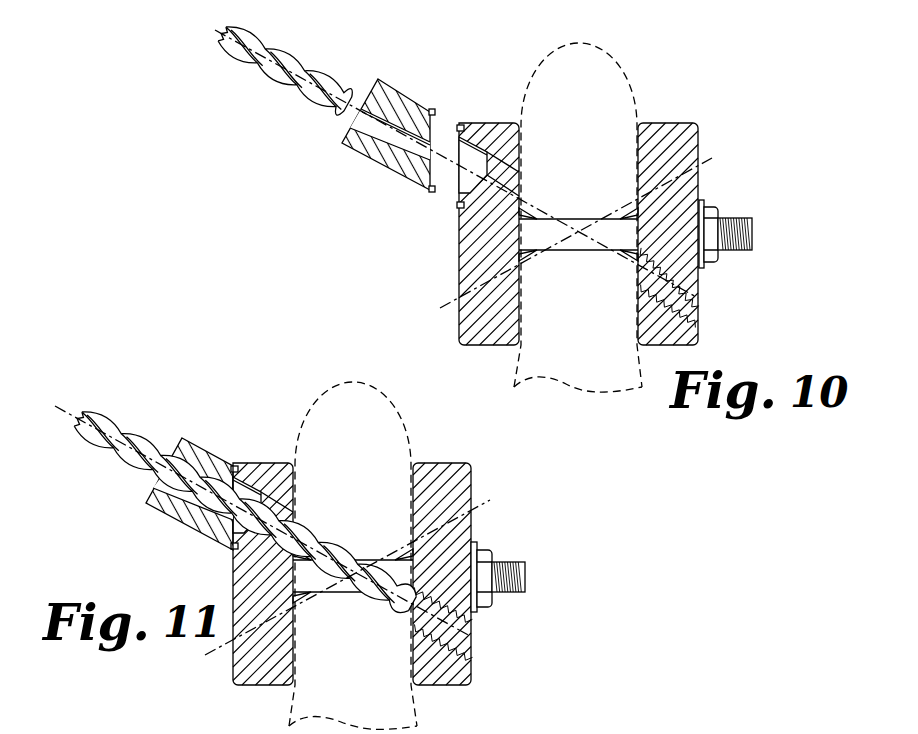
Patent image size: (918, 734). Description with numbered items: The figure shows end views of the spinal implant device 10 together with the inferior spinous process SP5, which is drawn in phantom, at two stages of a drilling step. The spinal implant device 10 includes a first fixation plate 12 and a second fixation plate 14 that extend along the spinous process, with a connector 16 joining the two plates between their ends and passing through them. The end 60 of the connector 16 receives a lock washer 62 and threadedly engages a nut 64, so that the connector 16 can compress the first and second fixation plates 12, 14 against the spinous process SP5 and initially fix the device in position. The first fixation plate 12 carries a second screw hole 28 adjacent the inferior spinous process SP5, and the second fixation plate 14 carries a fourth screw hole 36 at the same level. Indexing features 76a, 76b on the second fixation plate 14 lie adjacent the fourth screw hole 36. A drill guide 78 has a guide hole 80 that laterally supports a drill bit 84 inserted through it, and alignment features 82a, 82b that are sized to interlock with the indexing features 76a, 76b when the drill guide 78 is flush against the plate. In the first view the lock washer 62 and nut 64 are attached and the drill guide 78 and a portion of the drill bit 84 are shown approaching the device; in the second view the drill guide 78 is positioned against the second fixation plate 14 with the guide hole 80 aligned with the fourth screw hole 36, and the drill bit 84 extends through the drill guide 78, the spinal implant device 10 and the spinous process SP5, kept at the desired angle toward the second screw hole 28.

In FIG. 10, the spinal implant device 10 is at (761, 89).
In FIG. 11, the spinal implant device 10 is at (218, 398).
In FIG. 10, the first fixation plate 12 is at (668, 122).
In FIG. 11, the first fixation plate 12 is at (437, 462).
In FIG. 10, the second fixation plate 14 is at (480, 122).
In FIG. 11, the second fixation plate 14 is at (255, 462).
In FIG. 10, the connector 16 is at (578, 218).
In FIG. 11, the connector 16 is at (355, 560).
In FIG. 10, the second screw hole 28 is at (716, 314).
In FIG. 11, the second screw hole 28 is at (493, 653).
In FIG. 10, the fourth screw hole 36 is at (445, 201).
In FIG. 11, the fourth screw hole 36 is at (263, 506).
In FIG. 10, the end 60 is at (752, 231).
In FIG. 11, the end 60 is at (526, 577).
In FIG. 10, the lock washer 62 is at (704, 200).
In FIG. 11, the lock washer 62 is at (477, 543).
In FIG. 10, the nut 64 is at (716, 258).
In FIG. 11, the nut 64 is at (492, 607).
In FIG. 10, the indexing feature 76a is at (463, 124).
In FIG. 11, the indexing feature 76a is at (234, 469).
In FIG. 10, the indexing feature 76b is at (462, 207).
In FIG. 11, the indexing feature 76b is at (234, 546).
In FIG. 10, the drill guide 78 is at (362, 155).
In FIG. 11, the drill guide 78 is at (172, 520).
In FIG. 10, the guide hole 80 is at (337, 120).
In FIG. 11, the guide hole 80 is at (193, 494).
In FIG. 10, the alignment feature 82a is at (432, 107).
In FIG. 10, the alignment feature 82b is at (428, 190).
In FIG. 10, the drill bit 84 is at (303, 67).
In FIG. 11, the drill bit 84 is at (108, 426).
In FIG. 10, the inferior spinous process SP5 is at (572, 45).
In FIG. 11, the inferior spinous process SP5 is at (348, 386).